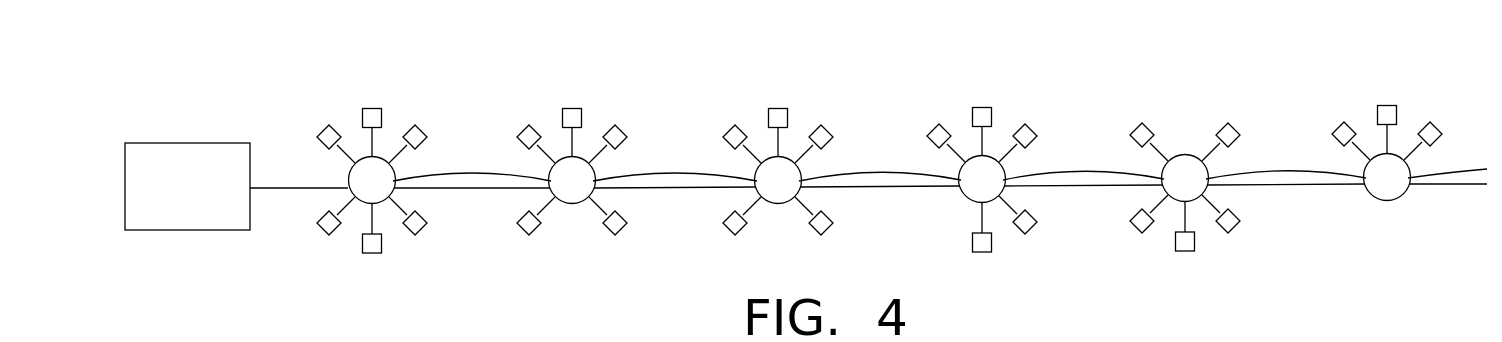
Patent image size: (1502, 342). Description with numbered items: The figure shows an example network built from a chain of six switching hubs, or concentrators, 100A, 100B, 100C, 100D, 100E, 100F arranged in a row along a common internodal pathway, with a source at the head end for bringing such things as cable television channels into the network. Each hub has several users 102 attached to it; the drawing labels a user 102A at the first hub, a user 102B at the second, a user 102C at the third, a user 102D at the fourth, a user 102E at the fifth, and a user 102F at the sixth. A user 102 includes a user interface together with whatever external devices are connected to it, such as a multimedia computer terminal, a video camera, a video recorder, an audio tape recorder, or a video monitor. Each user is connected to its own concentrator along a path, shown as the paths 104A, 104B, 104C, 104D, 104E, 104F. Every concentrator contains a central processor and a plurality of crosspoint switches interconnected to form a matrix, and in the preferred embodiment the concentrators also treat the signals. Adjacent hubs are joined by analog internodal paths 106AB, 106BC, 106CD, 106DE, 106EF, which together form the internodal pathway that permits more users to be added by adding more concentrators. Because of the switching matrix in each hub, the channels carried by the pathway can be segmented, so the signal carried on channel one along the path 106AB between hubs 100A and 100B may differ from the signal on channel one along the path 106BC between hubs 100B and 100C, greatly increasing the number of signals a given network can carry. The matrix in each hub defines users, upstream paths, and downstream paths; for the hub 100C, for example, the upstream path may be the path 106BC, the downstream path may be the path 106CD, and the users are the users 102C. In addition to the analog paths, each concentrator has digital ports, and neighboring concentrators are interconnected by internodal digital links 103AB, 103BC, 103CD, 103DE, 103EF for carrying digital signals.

The user 102 is at (197, 231).
The switching hub 100A is at (347, 198).
The switching hub 100B is at (569, 203).
The switching hub 100C is at (780, 204).
The switching hub 100D is at (974, 202).
The switching hub 100E is at (1183, 154).
The switching hub 100F is at (1393, 202).
The user 102A is at (322, 127).
The user 102B is at (522, 124).
The user 102C is at (728, 122).
The user 102D is at (935, 122).
The user 102E is at (1136, 122).
The user 102F is at (1340, 132).
The path 104A is at (345, 157).
The path 104B is at (552, 142).
The path 104C is at (756, 142).
The path 104D is at (962, 142).
The path 104E is at (1163, 142).
The path 104F is at (1365, 142).
The internodal digital link 103AB is at (468, 170).
The internodal digital link 103BC is at (665, 172).
The internodal digital link 103CD is at (877, 170).
The internodal digital link 103DE is at (1075, 170).
The internodal digital link 103EF is at (1285, 170).
The internodal path 106AB is at (460, 190).
The internodal path 106BC is at (685, 190).
The internodal path 106CD is at (865, 190).
The internodal path 106DE is at (1075, 190).
The internodal path 106EF is at (1288, 187).